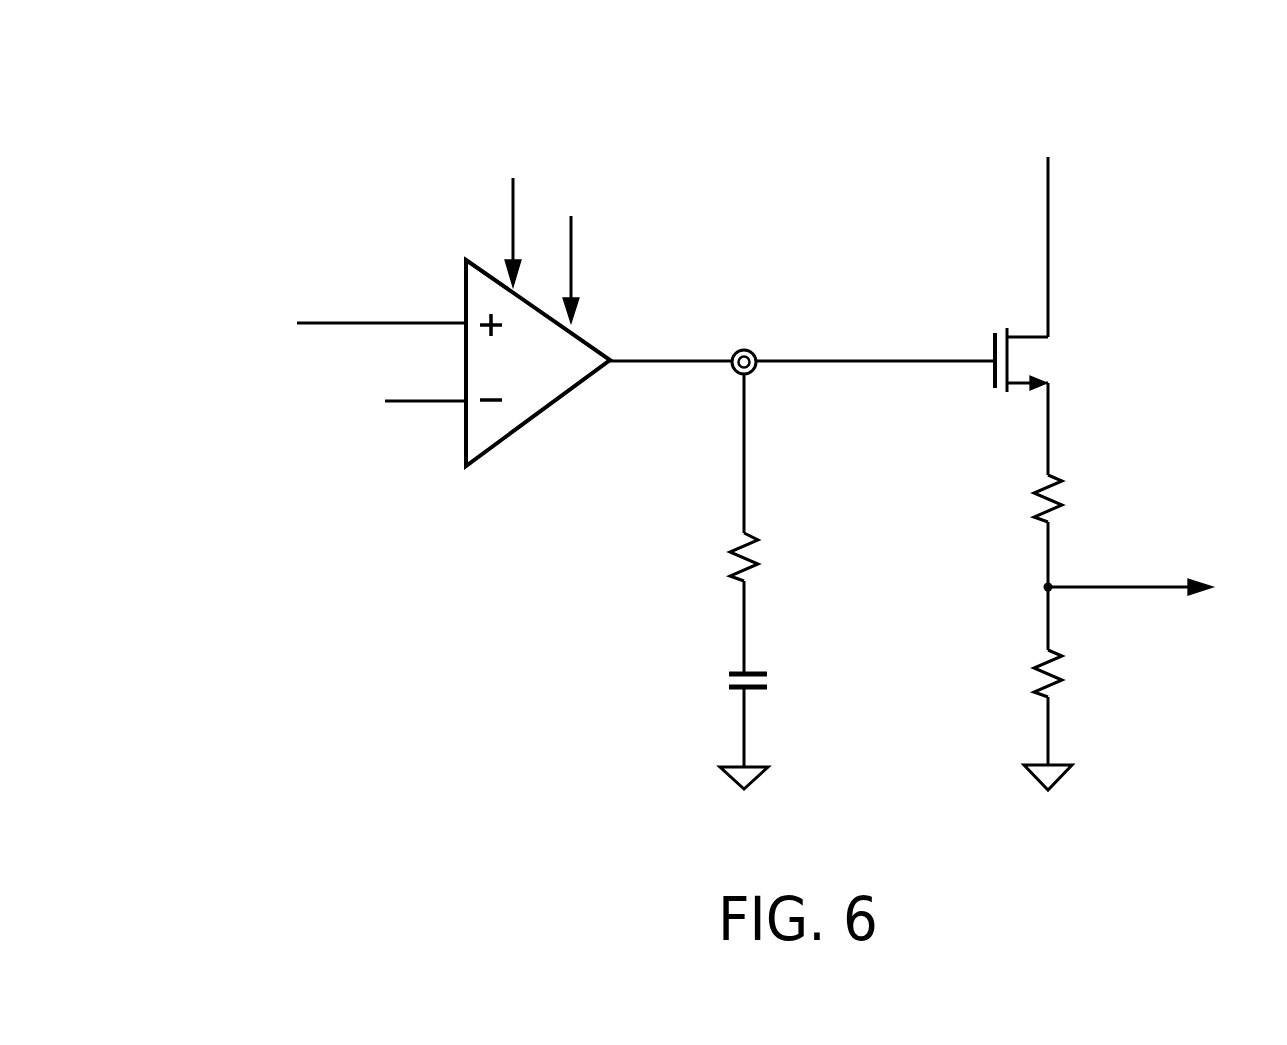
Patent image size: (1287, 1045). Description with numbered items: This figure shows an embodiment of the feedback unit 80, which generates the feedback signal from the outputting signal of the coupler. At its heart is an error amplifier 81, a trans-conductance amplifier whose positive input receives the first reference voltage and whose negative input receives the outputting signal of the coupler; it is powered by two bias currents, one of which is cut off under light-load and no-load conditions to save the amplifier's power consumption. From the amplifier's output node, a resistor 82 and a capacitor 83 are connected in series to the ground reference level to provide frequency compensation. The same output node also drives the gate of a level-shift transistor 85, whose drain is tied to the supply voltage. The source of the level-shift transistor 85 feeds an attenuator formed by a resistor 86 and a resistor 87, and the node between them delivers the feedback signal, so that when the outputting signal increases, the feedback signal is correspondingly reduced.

The feedback unit 80 is at (1273, 72).
The error amplifier 81 is at (542, 418).
The resistor 82 is at (768, 558).
The capacitor 83 is at (770, 680).
The level-shift transistor 85 is at (1050, 358).
The resistor 86 is at (1068, 497).
The resistor 87 is at (1068, 677).